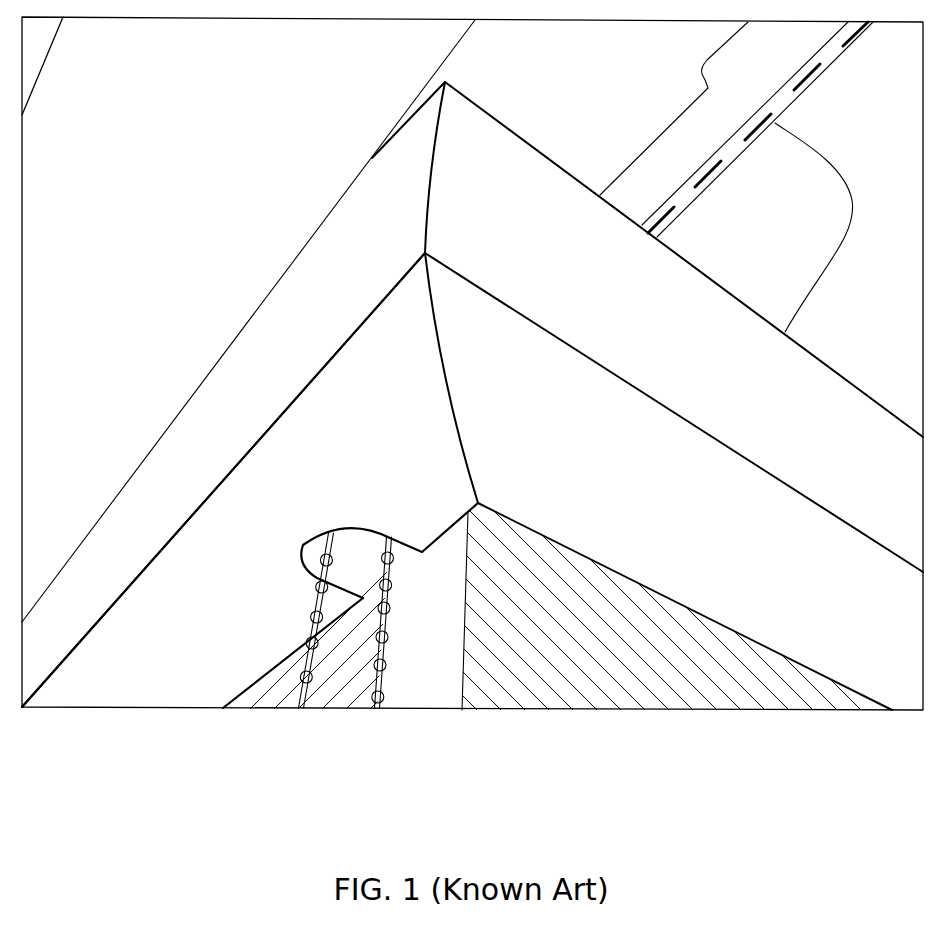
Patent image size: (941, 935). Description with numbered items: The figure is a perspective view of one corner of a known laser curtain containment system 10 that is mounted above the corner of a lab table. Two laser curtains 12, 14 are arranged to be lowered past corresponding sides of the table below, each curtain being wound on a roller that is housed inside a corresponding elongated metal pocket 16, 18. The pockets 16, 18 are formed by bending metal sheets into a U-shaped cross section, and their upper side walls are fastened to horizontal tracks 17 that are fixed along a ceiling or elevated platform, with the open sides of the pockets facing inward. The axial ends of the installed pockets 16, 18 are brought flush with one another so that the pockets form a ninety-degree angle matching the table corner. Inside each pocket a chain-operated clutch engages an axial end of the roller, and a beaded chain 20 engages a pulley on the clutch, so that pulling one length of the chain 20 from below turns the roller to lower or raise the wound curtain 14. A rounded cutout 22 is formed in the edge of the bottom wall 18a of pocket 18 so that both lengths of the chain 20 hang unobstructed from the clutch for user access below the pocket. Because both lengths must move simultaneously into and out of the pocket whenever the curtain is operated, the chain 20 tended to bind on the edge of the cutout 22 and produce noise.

The containment system 10 is at (472, 391).
The laser curtain 12 is at (625, 647).
The laser curtain 14 is at (267, 705).
The elongated metal pocket 16 is at (691, 346).
The horizontal track 17 is at (737, 147).
The elongated metal pocket 18 is at (284, 368).
The bottom wall 18a is at (153, 688).
The beaded chain 20 is at (372, 708).
The rounded cutout 22 is at (350, 530).